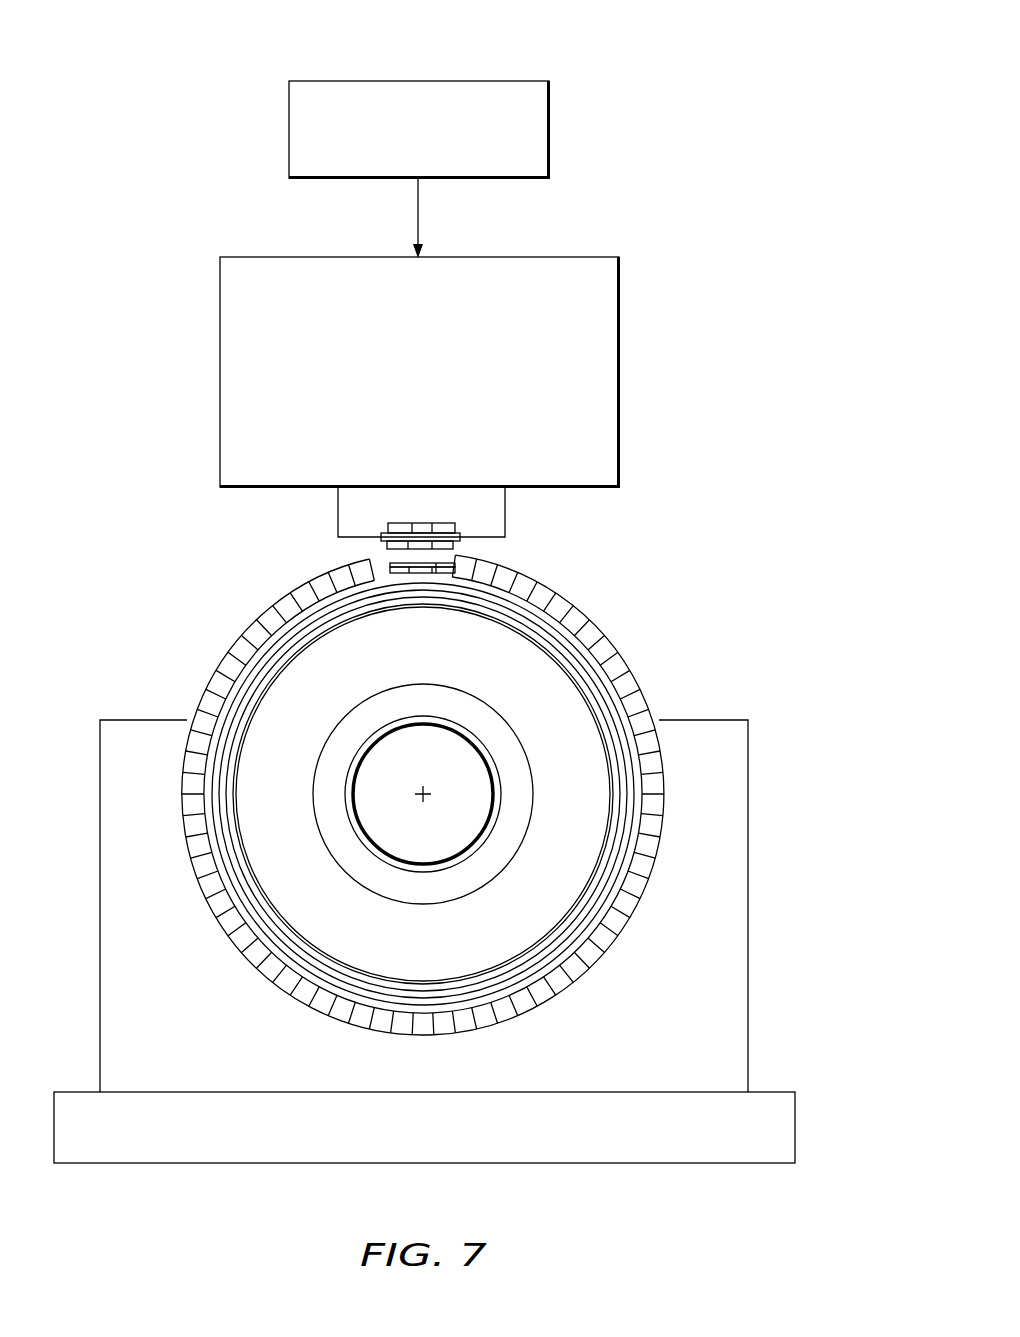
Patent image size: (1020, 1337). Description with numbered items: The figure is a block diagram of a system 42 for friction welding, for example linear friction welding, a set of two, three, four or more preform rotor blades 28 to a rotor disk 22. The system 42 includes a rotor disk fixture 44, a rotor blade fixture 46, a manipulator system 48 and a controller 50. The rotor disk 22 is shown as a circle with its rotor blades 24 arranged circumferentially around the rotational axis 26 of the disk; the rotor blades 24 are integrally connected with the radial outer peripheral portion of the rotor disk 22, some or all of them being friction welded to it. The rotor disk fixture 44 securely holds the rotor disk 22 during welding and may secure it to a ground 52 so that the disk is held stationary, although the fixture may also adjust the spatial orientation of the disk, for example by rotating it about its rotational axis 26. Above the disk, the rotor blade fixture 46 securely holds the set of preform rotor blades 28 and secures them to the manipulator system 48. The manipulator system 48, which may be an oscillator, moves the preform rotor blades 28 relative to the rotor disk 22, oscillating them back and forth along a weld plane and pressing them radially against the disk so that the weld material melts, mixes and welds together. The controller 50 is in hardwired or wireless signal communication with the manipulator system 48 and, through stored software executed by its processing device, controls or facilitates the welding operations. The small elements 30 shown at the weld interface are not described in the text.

The system 42 is at (708, 111).
The controller 50 is at (550, 130).
The manipulator system 48 is at (619, 386).
The rotor blade fixture 46 is at (506, 490).
The preform rotor blades 28 is at (376, 523).
The ultrasonic transducer array 30 is at (378, 567).
The rotor blades 24 is at (590, 630).
The rotor disk 22 is at (652, 679).
The rotational axis 26 is at (424, 797).
The rotor disk fixture 44 is at (748, 845).
The ground 52 is at (717, 1163).